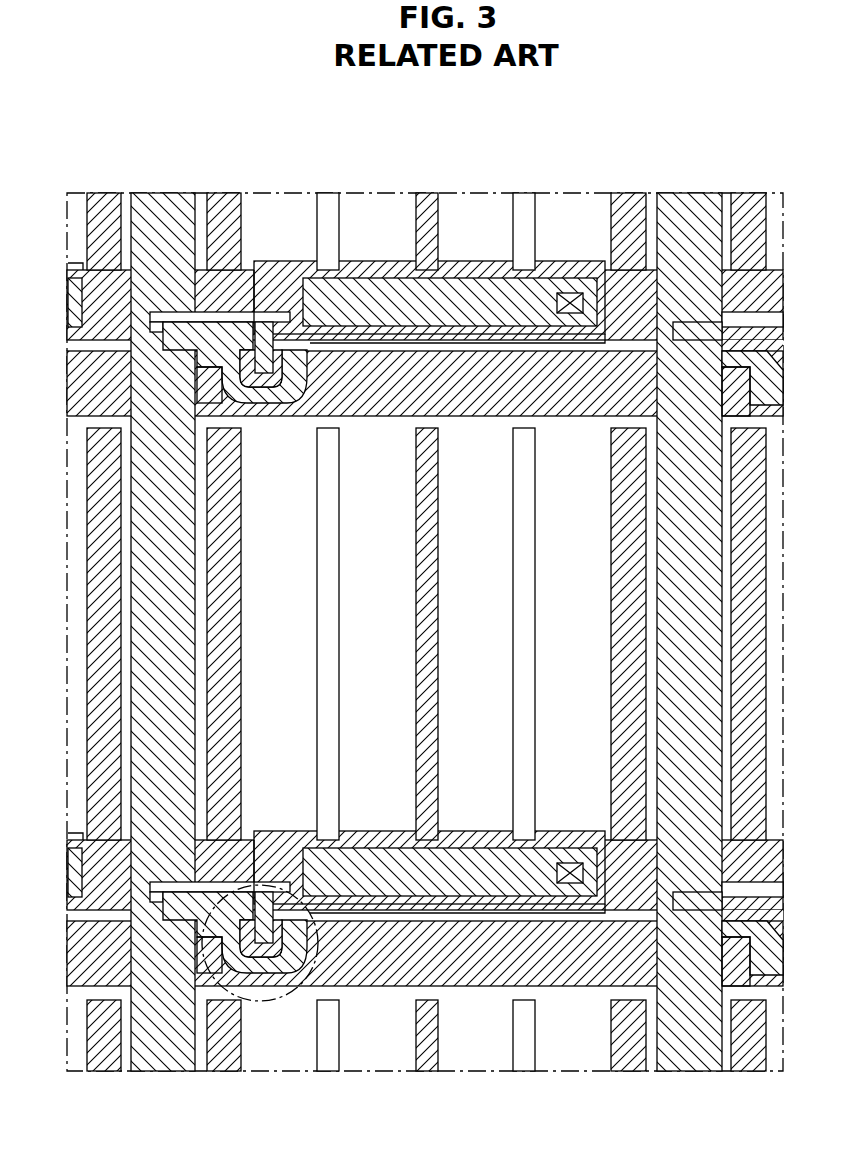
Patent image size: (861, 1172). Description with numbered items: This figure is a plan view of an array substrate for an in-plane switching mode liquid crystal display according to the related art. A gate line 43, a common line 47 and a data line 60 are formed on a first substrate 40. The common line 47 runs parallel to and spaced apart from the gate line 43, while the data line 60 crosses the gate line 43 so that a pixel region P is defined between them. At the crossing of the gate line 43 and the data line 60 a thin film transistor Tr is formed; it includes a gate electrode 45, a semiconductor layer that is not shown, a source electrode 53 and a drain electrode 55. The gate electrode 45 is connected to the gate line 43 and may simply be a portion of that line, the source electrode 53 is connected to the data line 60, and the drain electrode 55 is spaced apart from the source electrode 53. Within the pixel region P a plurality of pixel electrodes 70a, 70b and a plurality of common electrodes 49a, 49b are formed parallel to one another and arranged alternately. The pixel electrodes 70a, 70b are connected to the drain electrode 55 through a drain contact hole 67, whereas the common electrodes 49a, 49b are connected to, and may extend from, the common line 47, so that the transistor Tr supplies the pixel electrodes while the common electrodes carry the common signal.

The first substrate 40 is at (508, 166).
The pixel region P is at (375, 446).
The gate line 43 is at (482, 987).
The gate electrode 45 is at (252, 990).
The common line 47 is at (626, 898).
The common electrode 49a is at (241, 485).
The common electrode 49b is at (430, 535).
The source electrode 53 is at (232, 987).
The drain electrode 55 is at (300, 963).
The data line 60 is at (150, 600).
The drain contact hole 67 is at (568, 862).
The pixel electrode 70a is at (332, 485).
The pixel electrode 70b is at (511, 490).
The TFT Tr is at (270, 1000).